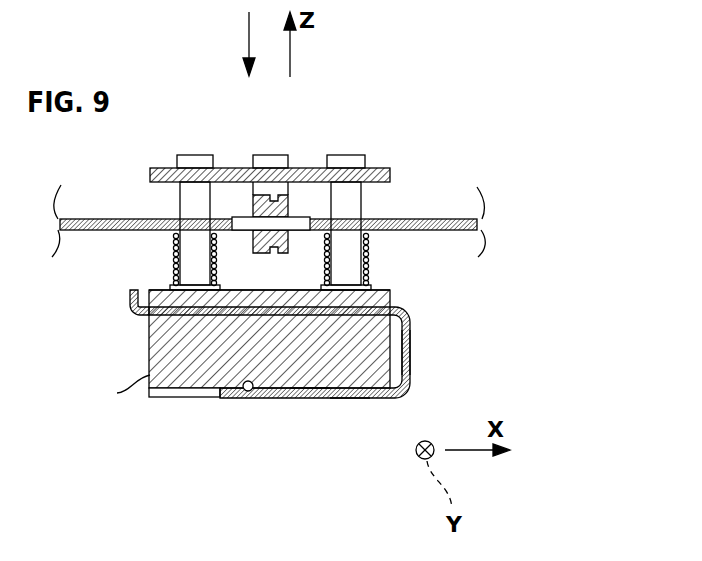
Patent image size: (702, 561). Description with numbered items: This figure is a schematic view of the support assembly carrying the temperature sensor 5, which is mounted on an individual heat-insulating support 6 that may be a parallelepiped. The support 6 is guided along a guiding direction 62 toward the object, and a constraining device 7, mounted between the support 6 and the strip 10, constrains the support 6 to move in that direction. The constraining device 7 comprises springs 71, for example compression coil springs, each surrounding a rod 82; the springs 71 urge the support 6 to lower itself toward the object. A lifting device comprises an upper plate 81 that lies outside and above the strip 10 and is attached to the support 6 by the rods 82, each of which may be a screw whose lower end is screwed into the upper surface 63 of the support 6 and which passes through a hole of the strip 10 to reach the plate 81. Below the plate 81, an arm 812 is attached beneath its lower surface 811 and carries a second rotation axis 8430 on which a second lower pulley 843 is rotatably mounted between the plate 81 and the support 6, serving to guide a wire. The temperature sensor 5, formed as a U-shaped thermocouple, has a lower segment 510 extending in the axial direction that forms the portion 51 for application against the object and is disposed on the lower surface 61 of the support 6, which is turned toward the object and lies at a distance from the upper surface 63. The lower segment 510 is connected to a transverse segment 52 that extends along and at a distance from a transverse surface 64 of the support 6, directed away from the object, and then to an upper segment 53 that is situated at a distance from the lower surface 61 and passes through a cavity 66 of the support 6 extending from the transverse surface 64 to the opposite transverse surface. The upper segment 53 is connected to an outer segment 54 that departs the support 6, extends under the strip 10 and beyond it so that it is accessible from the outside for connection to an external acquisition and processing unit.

The guiding direction 62 is at (249, 42).
The upper plate 81 is at (268, 195).
The lower surface of the plate 811 is at (304, 183).
The arm 812 is at (287, 212).
The second lower pulley 843 is at (252, 247).
The second rotation axis 8430 is at (270, 226).
The strip 10 is at (448, 208).
The rod 82 is at (192, 252).
The constraining device 7 is at (173, 260).
The spring 71 is at (370, 265).
The cavity 66 is at (288, 300).
The upper segment 53 is at (345, 303).
The outer segment 54 is at (128, 290).
The heat-insulating support 6 is at (253, 341).
The transverse surface 64 is at (392, 343).
The transverse segment 52 is at (408, 370).
The upper surface 63 is at (213, 395).
The lower surface 61 is at (245, 392).
The portion for application 51 is at (312, 398).
The lower segment 510 is at (340, 398).
The temperature sensor 5 is at (274, 374).